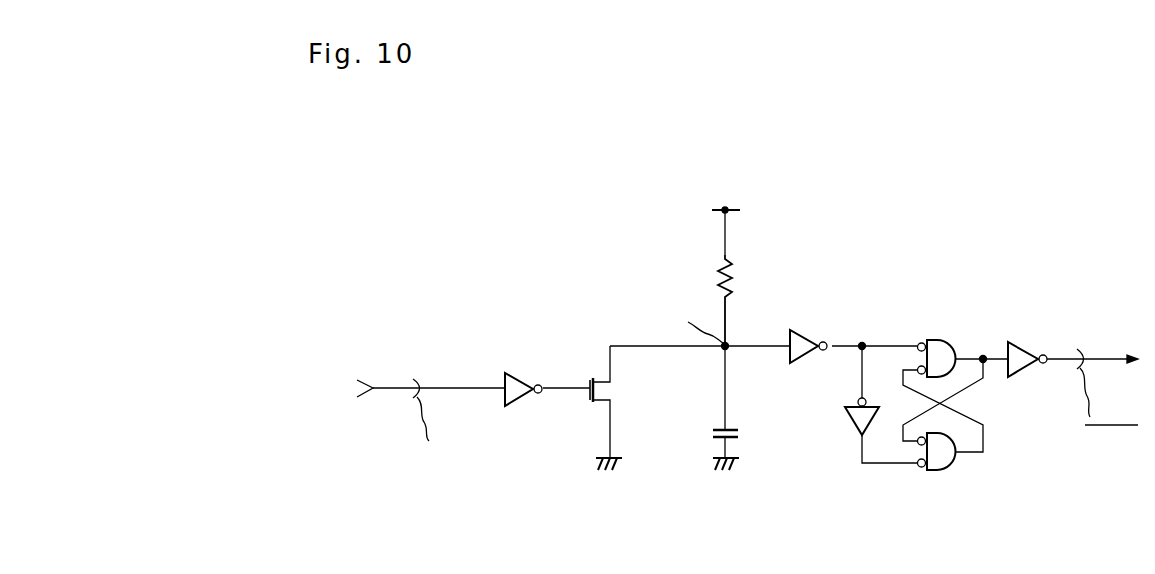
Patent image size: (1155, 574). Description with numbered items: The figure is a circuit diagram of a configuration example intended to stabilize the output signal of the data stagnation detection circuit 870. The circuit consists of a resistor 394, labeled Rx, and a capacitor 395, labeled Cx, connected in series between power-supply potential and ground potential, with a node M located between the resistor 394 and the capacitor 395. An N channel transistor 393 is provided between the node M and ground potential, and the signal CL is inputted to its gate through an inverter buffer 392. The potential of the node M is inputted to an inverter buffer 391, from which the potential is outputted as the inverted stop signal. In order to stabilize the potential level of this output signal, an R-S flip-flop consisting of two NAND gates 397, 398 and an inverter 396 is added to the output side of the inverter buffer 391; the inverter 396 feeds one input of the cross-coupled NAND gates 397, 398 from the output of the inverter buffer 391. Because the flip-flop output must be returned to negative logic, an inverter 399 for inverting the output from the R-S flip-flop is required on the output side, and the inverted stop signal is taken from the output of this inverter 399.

The data stagnation detection circuit 870 is at (786, 228).
The inverter buffer 391 is at (805, 330).
The inverter buffer 392 is at (518, 372).
The N channel transistor 393 is at (592, 405).
The resistor 394 is at (717, 277).
The capacitor 395 is at (712, 428).
The inverter 396 is at (852, 422).
The NAND gate 397 is at (940, 338).
The NAND gate 398 is at (947, 470).
The inverter 399 is at (1020, 340).